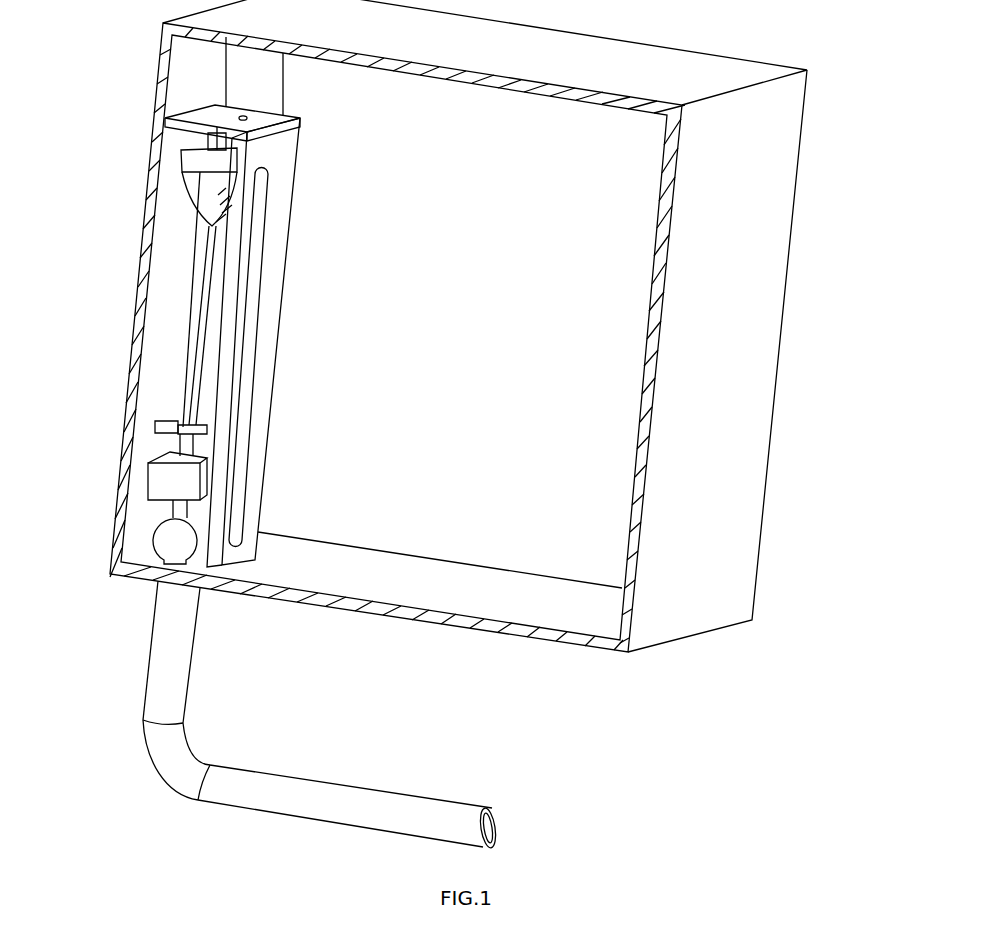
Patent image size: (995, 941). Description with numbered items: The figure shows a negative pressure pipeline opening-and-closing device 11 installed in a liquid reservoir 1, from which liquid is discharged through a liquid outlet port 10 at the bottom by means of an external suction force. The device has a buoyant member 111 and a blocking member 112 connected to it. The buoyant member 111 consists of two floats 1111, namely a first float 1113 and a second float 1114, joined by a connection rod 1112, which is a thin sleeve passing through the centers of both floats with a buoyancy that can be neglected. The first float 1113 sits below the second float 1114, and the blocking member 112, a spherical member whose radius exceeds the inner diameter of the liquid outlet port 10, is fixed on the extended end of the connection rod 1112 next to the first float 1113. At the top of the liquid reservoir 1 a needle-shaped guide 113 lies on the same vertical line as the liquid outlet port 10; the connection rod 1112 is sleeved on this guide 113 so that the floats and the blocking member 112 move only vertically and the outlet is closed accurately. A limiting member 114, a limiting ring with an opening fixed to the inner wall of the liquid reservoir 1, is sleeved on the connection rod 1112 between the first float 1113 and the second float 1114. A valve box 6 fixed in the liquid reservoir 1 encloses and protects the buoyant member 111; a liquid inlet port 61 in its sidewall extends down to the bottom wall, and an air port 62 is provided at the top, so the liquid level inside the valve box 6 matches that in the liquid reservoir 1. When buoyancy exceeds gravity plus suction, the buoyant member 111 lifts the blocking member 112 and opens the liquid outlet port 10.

The liquid reservoir 1 is at (737, 292).
The liquid outlet port 10 is at (157, 580).
The feeding assembly 11 is at (208, 302).
The valve box 6 is at (269, 323).
The liquid inlet port 61 is at (265, 330).
The air port 62 is at (245, 118).
The guide 113 is at (210, 80).
The second float 1114 is at (181, 151).
The floats 1111 is at (172, 178).
The connection rod 1112 is at (196, 332).
The buoyant member 111 is at (185, 380).
The limiting member 114 is at (157, 425).
The first float 1113 is at (150, 470).
The blocking member 112 is at (147, 530).